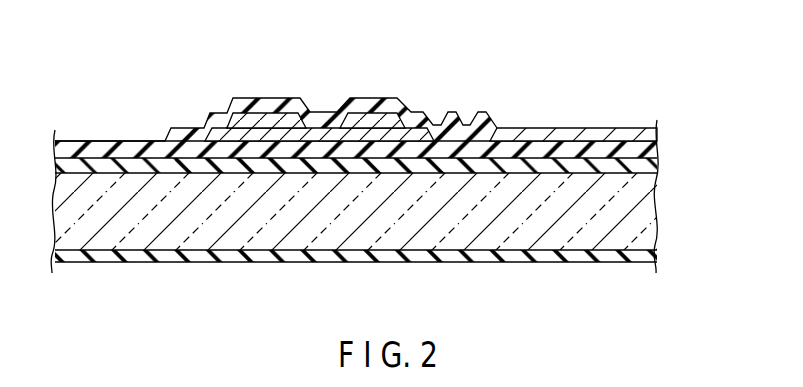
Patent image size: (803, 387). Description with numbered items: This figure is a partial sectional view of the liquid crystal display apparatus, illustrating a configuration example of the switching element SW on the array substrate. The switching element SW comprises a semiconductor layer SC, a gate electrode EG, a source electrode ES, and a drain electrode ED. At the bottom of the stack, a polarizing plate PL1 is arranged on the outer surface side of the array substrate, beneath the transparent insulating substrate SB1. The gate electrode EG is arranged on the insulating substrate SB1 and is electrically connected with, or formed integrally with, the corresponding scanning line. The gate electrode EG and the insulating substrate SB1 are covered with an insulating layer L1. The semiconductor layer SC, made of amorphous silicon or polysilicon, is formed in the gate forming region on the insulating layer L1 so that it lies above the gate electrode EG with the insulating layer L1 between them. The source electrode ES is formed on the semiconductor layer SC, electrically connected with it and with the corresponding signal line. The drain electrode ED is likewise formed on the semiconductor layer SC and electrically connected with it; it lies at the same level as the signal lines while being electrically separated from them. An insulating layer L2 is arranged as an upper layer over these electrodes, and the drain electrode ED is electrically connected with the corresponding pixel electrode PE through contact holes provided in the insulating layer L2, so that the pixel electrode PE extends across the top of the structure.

The source electrode ES is at (254, 114).
The semiconductor layer SC is at (318, 132).
The drain electrode ED is at (380, 117).
The insulating layer L2 is at (405, 101).
The pixel electrode PE is at (607, 133).
The insulating layer L1 is at (385, 231).
The insulating substrate SB1 is at (650, 214).
The polarizing plate PL1 is at (650, 257).
The switching element SW is at (319, 180).
The gate electrode EG is at (325, 167).